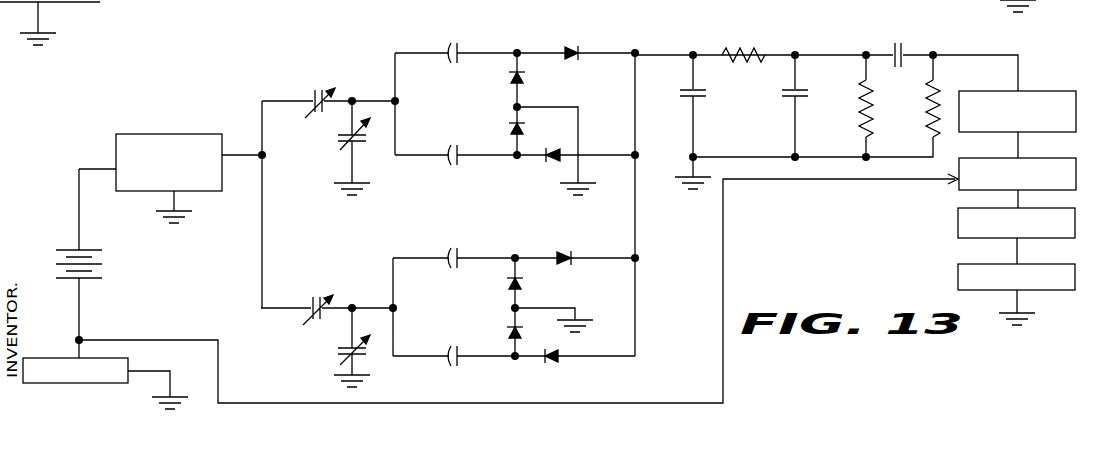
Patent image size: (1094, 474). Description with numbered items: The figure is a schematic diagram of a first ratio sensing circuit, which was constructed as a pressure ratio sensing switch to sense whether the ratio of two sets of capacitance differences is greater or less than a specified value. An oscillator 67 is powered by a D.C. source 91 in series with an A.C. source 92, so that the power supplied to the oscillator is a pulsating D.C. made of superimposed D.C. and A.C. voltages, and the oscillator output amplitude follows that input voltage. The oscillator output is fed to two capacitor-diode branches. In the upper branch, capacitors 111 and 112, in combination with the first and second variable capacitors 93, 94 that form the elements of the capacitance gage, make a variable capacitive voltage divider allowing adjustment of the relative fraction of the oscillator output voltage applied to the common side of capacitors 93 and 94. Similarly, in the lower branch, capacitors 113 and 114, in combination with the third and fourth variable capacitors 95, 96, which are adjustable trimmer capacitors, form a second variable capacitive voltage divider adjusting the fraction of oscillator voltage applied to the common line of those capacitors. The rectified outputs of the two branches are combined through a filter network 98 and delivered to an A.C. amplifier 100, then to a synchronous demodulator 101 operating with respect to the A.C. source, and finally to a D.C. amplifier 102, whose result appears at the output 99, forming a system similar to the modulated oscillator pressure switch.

The oscillator 67 is at (200, 106).
The D.C. source 91 is at (119, 230).
The A.C. source 92 is at (48, 358).
The capacitor 111 is at (313, 92).
The capacitor 112 is at (340, 130).
The capacitor 113 is at (311, 300).
The capacitor 114 is at (342, 343).
The first variable capacitor 93 is at (452, 42).
The second variable capacitor 94 is at (452, 144).
The third variable capacitor 95 is at (452, 248).
The fourth variable capacitor 96 is at (452, 344).
The filter network 98 is at (682, 40).
The A.C. amplifier 100 is at (1040, 91).
The synchronous demodulator 101 is at (1030, 158).
The D.C. amplifier 102 is at (958, 222).
The output 99 is at (958, 280).